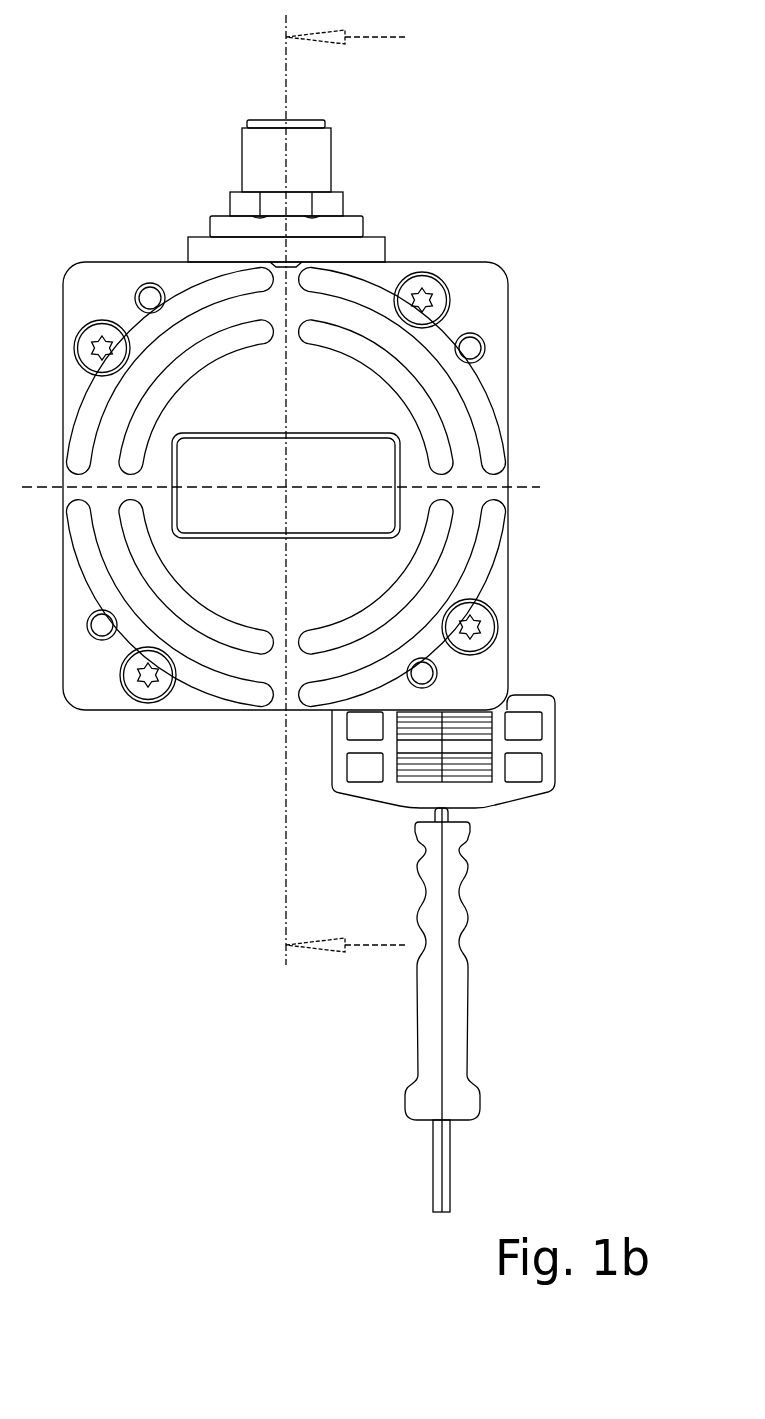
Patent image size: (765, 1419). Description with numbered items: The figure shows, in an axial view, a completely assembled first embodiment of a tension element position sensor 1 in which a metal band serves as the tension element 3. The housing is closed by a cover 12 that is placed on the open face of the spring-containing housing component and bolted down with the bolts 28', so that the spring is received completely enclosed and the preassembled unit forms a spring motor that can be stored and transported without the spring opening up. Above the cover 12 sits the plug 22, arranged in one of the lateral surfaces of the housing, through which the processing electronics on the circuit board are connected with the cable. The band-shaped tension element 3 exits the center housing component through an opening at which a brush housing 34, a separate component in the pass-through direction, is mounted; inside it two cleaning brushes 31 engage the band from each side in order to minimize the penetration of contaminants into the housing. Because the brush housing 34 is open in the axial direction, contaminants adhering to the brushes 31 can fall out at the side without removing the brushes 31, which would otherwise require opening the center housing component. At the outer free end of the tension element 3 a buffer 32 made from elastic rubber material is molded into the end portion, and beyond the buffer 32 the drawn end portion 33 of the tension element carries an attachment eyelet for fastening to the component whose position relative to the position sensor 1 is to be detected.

The tension element position sensor 1 is at (121, 148).
The cover 12 is at (95, 285).
The plug 22 is at (322, 163).
The bolts 28' is at (338, 438).
The tension element 3 is at (447, 748).
The cleaning brushes 31 is at (397, 738).
The brush housing 34 is at (549, 773).
The buffer 32 is at (455, 1020).
The cable end 33 is at (445, 1170).